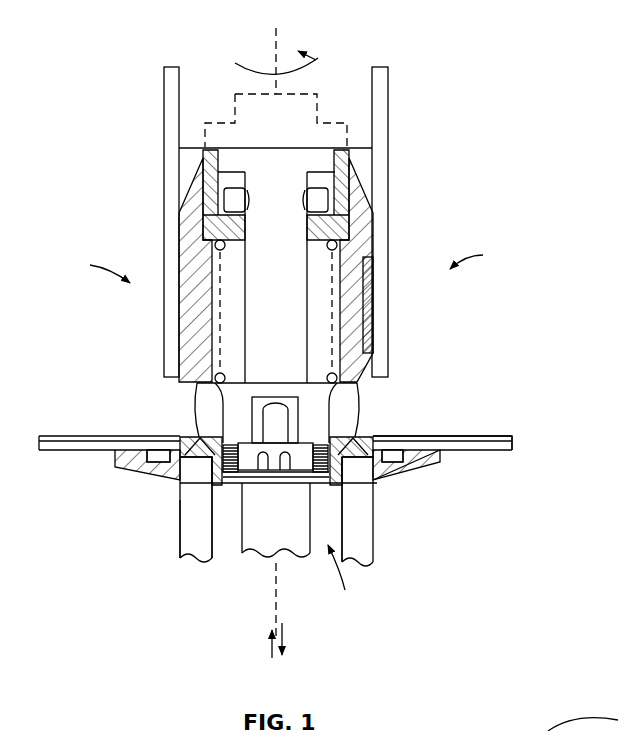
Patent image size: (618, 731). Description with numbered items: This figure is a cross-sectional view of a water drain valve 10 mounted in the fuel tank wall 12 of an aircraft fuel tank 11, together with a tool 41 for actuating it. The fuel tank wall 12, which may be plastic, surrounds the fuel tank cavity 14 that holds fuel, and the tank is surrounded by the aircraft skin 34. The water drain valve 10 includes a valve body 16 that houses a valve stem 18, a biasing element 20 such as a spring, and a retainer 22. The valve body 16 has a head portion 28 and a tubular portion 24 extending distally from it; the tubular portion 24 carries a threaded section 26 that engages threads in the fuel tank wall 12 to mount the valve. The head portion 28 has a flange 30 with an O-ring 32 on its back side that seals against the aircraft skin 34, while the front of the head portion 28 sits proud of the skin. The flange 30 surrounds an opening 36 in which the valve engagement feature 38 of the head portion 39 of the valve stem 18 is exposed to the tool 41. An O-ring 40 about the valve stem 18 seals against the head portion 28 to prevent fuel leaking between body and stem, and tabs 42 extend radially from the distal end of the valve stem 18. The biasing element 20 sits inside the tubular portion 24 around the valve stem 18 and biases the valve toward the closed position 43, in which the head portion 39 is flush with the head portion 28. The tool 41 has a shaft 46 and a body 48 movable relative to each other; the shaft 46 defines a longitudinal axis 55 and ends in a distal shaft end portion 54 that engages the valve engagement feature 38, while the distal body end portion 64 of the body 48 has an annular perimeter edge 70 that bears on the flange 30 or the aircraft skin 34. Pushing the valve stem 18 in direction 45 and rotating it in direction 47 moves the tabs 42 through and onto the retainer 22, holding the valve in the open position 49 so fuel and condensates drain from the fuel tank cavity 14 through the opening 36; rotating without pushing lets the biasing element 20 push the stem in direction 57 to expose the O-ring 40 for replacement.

The water drain valve 10 is at (425, 470).
The fuel tank 11 is at (388, 90).
The fuel tank wall 12 is at (178, 240).
The fuel tank cavity 14 is at (287, 262).
The valve body 16 is at (358, 381).
The valve stem 18 is at (307, 400).
The biasing element 20 is at (342, 250).
The retainer 22 is at (338, 170).
The tubular portion 24 is at (362, 228).
The threaded section 26 is at (365, 203).
The head portion 28 is at (405, 478).
The flange 30 is at (115, 467).
The O-ring 32 is at (157, 452).
The aircraft skin 34 is at (488, 452).
The opening 36 is at (362, 548).
The valve engagement feature 38 is at (262, 484).
The head portion 39 is at (290, 484).
The O-ring 40 is at (350, 440).
The tool 41 is at (187, 535).
The tabs 42 is at (228, 198).
The closed position 43 is at (344, 578).
The direction 45 is at (266, 648).
The shaft 46 is at (236, 484).
The direction 47 is at (318, 57).
The body 48 is at (213, 480).
The open position 49 is at (347, 130).
The distal shaft end portion 54 is at (242, 484).
The longitudinal axis 55 is at (278, 33).
The direction 57 is at (287, 638).
The distal body end portion 64 is at (187, 505).
The annular perimeter edge 70 is at (180, 480).